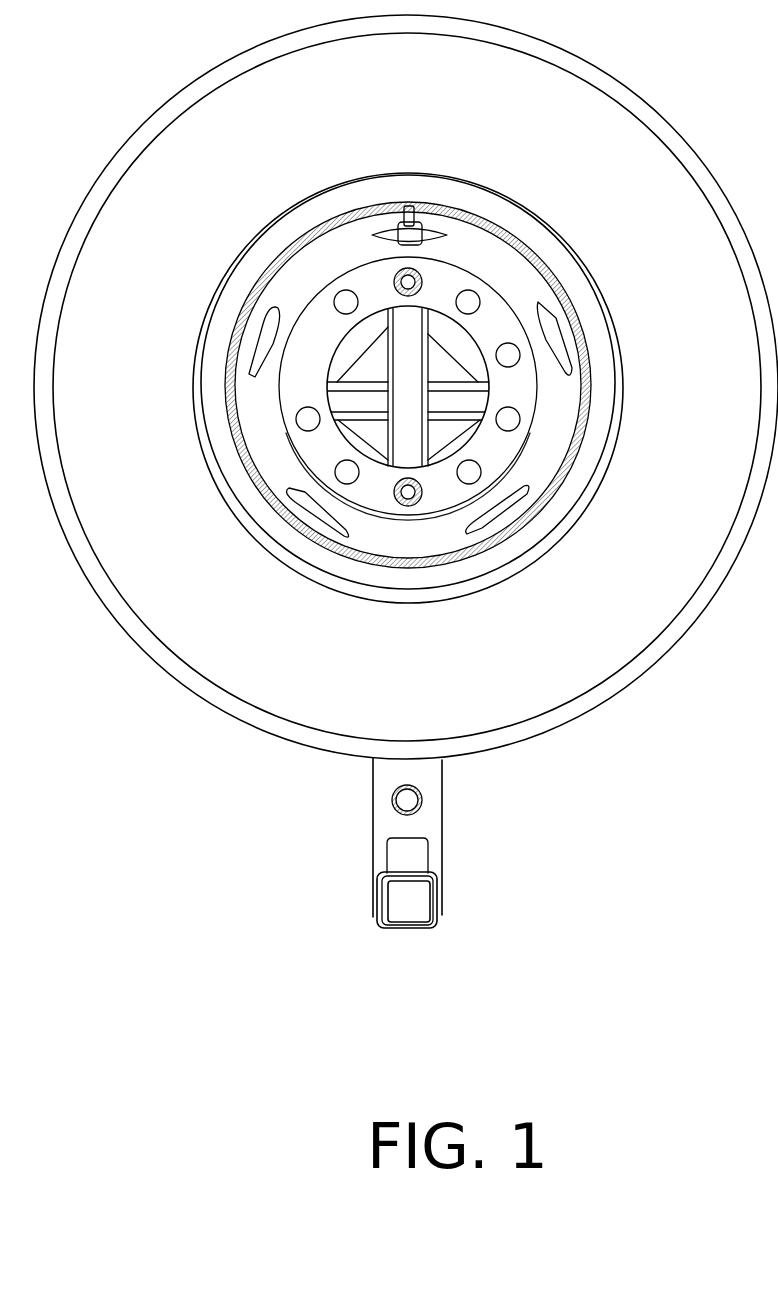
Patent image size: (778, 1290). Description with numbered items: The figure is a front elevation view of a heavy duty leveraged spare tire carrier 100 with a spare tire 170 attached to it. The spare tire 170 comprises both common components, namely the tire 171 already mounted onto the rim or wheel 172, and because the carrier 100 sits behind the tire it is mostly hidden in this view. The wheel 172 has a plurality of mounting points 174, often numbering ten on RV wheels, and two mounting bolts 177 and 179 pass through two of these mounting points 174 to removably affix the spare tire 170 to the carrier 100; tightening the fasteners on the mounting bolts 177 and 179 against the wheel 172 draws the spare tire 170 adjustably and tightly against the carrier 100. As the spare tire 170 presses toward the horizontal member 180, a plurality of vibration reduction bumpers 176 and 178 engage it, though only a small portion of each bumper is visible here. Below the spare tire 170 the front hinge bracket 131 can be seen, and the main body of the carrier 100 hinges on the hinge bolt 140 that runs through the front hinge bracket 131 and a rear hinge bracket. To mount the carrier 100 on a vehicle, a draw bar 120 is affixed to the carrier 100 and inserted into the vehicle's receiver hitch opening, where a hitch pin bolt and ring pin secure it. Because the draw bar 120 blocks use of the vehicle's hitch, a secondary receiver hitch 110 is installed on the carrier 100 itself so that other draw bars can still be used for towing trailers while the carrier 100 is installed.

The heavy duty leveraged spare tire carrier 100 is at (212, 1014).
The secondary receiver hitch 110 is at (428, 921).
The draw bar 120 is at (428, 848).
The front hinge bracket 131 is at (432, 779).
The hinge bolt 140 is at (393, 800).
The spare tire 170 is at (160, 68).
The tire 171 is at (594, 178).
The wheel 172 is at (482, 248).
The mounting points 174 is at (338, 289).
The vibration reduction bumper 176 is at (514, 410).
The mounting bolt 177 is at (401, 270).
The vibration reduction bumper 178 is at (308, 410).
The mounting bolt 179 is at (409, 505).
The horizontal member 180 is at (473, 400).